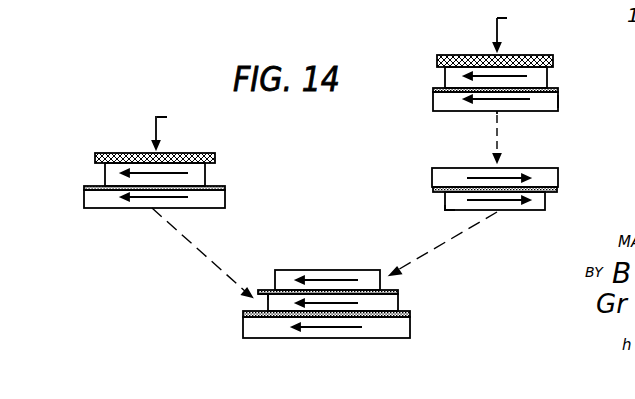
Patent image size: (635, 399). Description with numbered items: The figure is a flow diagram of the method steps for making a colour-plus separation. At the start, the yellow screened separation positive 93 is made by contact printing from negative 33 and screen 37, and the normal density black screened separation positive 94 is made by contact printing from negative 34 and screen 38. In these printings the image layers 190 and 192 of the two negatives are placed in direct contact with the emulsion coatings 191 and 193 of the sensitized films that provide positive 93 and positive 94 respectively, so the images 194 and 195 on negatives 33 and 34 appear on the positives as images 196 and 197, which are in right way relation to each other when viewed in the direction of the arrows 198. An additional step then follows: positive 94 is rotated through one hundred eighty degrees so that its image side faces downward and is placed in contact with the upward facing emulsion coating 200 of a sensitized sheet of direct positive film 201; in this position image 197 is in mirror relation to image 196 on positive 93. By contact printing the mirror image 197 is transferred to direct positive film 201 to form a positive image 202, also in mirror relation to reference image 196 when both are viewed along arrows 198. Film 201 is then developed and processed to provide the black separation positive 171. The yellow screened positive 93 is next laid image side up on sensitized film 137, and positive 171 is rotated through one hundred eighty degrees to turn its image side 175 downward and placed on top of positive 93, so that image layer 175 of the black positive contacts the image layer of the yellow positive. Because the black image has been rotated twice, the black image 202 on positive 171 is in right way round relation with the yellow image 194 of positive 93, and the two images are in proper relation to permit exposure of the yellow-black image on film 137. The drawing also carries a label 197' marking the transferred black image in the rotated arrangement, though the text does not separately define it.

The negative 33 is at (206, 175).
The negative 34 is at (446, 72).
The screen 37 is at (96, 155).
The screen 38 is at (437, 58).
The yellow screened separation positive 93 is at (226, 198).
The black screened separation positive 94 is at (433, 97).
The sensitized film 137 is at (412, 326).
The black separation positive 171 is at (342, 271).
The image side 175 is at (281, 291).
The image layer 190 is at (117, 185).
The emulsion coating 191 is at (96, 188).
The image layer 192 is at (533, 89).
The emulsion coating 193 is at (557, 98).
The image 194 is at (147, 173).
The image 195 is at (513, 78).
The image 196 is at (146, 198).
The image 197 is at (524, 127).
The magnetization direction 197' is at (458, 152).
The arrows 198 is at (349, 74).
The emulsion coating 200 is at (535, 192).
The direct positive film 201 is at (458, 212).
The positive image 202 is at (503, 203).